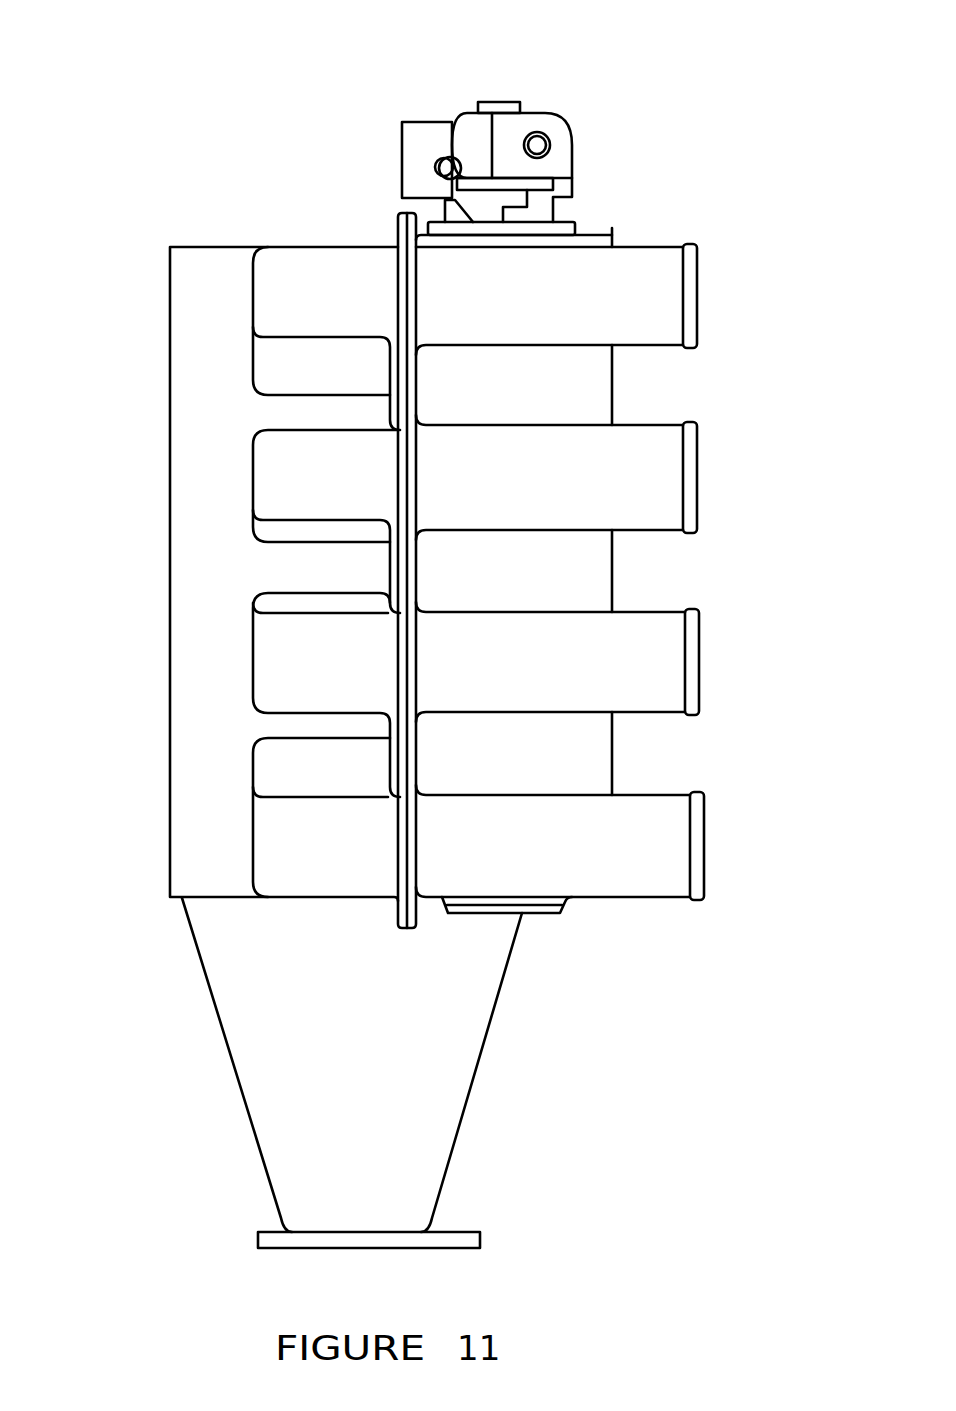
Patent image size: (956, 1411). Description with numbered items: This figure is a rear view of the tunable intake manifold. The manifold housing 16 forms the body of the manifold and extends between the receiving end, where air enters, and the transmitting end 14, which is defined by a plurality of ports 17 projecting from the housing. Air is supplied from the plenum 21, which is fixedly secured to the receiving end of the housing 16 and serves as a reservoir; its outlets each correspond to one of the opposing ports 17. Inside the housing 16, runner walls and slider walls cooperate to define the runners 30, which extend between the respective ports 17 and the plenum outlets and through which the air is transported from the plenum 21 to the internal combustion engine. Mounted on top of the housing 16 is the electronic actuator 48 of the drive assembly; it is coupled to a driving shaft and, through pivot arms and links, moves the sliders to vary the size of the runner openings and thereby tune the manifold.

The transmitting end 14 is at (437, 624).
The manifold housing 16 is at (170, 298).
The ports 17 is at (698, 287).
The plenum 21 is at (478, 1067).
The runners 30 is at (630, 285).
The electronic actuator 48 is at (428, 133).